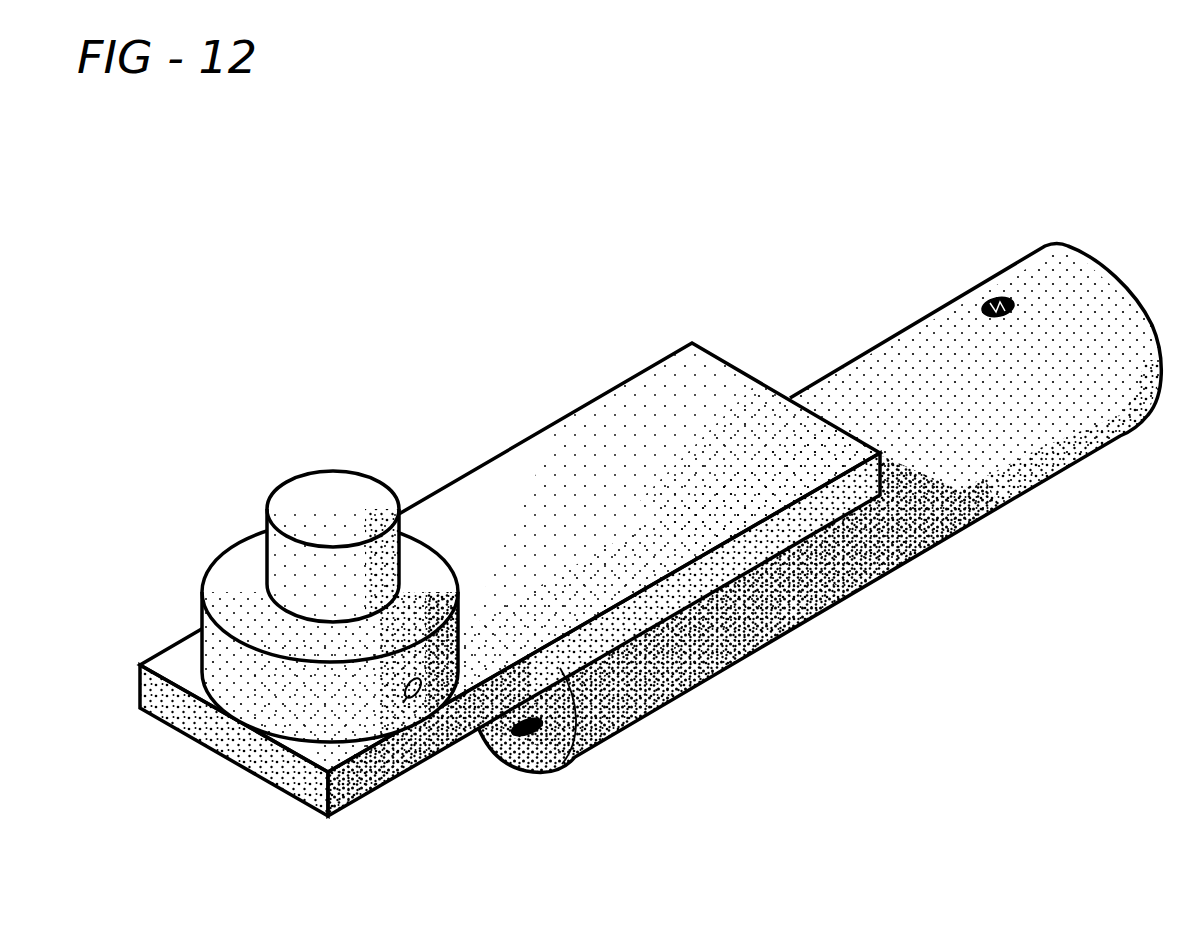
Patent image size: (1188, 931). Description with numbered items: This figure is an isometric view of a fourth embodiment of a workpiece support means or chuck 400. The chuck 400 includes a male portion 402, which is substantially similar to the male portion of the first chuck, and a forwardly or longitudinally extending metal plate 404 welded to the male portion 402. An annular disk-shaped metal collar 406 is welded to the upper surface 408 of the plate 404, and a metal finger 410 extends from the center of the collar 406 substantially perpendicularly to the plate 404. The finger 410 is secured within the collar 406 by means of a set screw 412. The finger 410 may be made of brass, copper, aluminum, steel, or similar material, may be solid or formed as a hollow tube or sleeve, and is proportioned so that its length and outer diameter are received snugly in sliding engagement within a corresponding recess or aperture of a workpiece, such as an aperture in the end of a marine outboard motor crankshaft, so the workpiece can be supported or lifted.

The chuck 400 is at (822, 668).
The male portion 402 is at (923, 340).
The plate 404 is at (642, 427).
The collar 406 is at (372, 702).
The upper surface 408 is at (508, 532).
The finger 410 is at (287, 517).
The set screw 412 is at (437, 710).